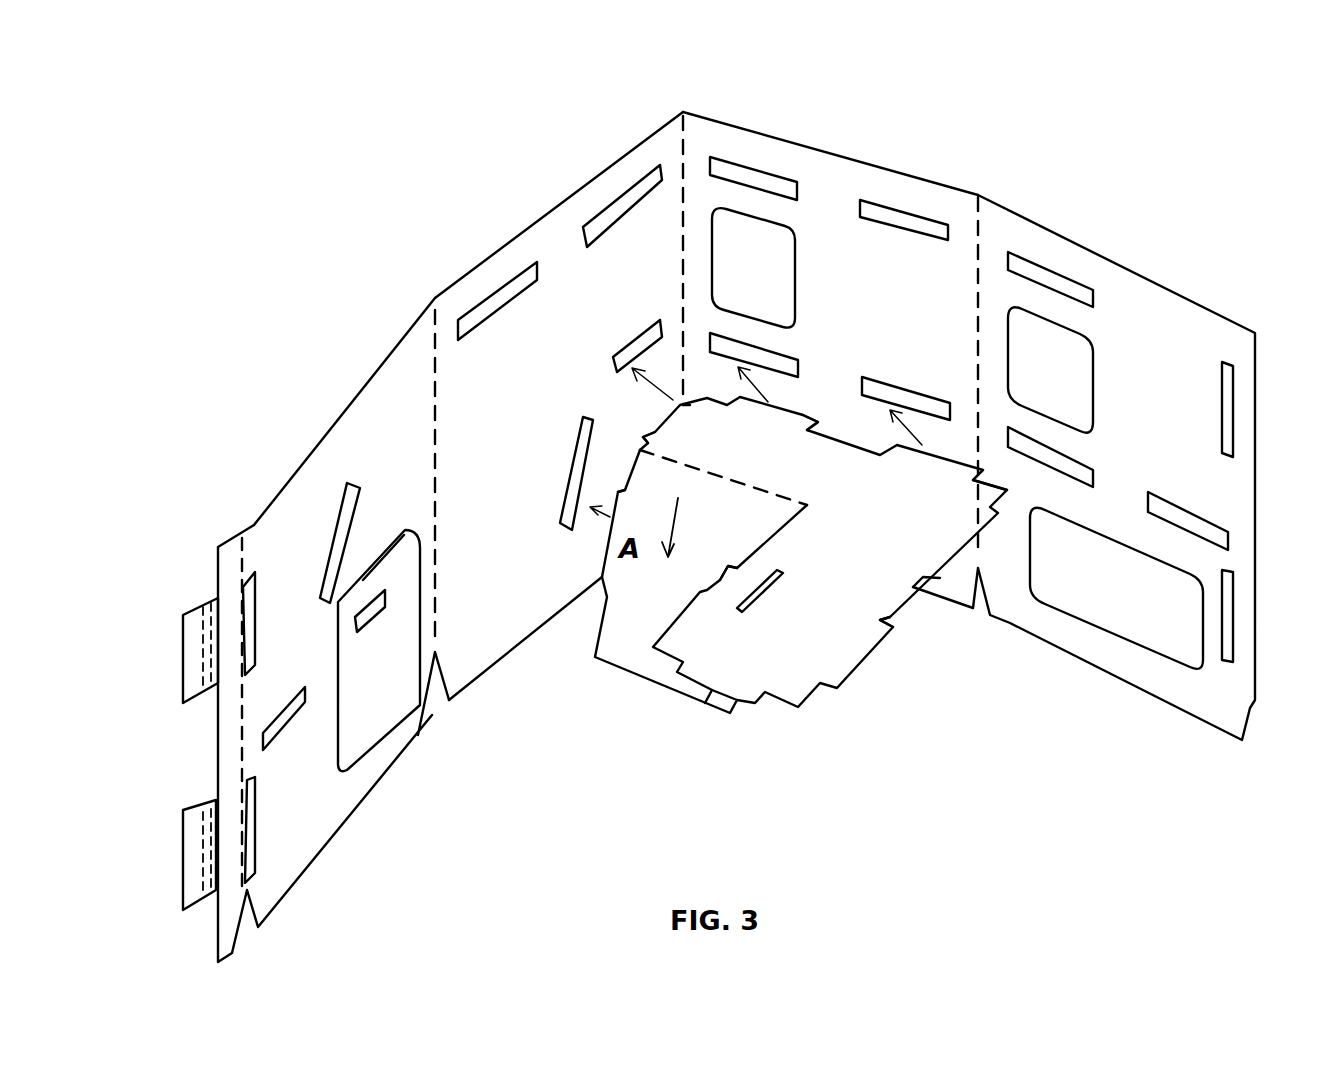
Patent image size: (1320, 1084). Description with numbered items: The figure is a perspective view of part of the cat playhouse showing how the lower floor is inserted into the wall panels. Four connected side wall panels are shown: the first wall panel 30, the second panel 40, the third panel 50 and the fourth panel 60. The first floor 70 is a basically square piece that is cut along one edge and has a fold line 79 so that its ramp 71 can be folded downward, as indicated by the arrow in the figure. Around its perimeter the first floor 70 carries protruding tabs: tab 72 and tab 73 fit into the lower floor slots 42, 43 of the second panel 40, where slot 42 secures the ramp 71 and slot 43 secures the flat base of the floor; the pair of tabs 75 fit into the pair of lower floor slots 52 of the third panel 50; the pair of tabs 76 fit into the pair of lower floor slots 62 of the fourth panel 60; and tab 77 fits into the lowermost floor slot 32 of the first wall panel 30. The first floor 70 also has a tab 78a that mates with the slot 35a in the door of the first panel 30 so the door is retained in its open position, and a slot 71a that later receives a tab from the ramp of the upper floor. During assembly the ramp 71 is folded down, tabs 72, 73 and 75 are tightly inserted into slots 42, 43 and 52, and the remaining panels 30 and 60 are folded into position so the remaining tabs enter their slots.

The first wall panel 30 is at (263, 528).
The lowermost floor slot 32 is at (290, 715).
The door slot 35a is at (375, 607).
The second panel 40 is at (640, 217).
The lower floor slot 42 is at (564, 530).
The lower floor slot 43 is at (642, 338).
The third panel 50 is at (790, 165).
The lower floor slots 52 is at (775, 363).
The fourth panel 60 is at (1183, 323).
The lower floor slots 62 is at (1053, 472).
The first floor 70 is at (960, 515).
The ramp 71 is at (633, 653).
The slot 71a is at (753, 603).
The tab 72 is at (613, 507).
The tab 73 is at (655, 430).
The tabs 75 is at (805, 417).
The tabs 76 is at (953, 565).
The tab 77 is at (712, 690).
The tab 78a is at (718, 582).
The fold line 79 is at (688, 467).